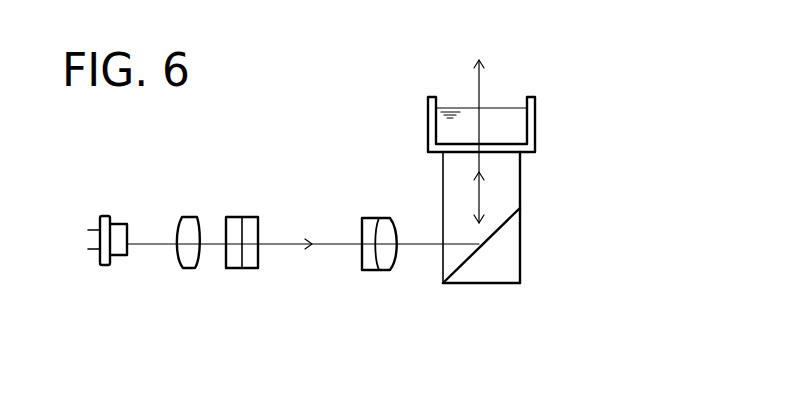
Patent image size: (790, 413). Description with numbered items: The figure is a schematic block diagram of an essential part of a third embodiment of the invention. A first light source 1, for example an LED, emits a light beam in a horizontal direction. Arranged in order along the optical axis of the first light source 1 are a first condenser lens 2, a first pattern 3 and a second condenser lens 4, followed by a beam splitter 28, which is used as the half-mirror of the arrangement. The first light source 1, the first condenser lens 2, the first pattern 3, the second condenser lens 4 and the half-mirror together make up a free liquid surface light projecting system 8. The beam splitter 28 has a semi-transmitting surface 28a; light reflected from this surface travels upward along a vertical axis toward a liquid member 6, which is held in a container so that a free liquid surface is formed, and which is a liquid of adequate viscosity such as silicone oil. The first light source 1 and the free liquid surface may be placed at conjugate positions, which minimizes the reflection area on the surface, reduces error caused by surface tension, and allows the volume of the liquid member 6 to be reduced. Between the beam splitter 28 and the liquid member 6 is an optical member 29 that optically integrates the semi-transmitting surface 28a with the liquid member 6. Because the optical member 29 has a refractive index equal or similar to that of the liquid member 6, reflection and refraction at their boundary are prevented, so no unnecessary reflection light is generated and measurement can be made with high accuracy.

The first light source 1 is at (122, 224).
The first condenser lens 2 is at (193, 214).
The first pattern 3 is at (250, 262).
The second condenser lens 4 is at (373, 217).
The liquid member 6 is at (503, 118).
The free liquid surface light projecting system 8 is at (380, 303).
The beam splitter 28 is at (520, 227).
The semi-transmitting surface 28a is at (490, 237).
The optical member 29 is at (520, 177).